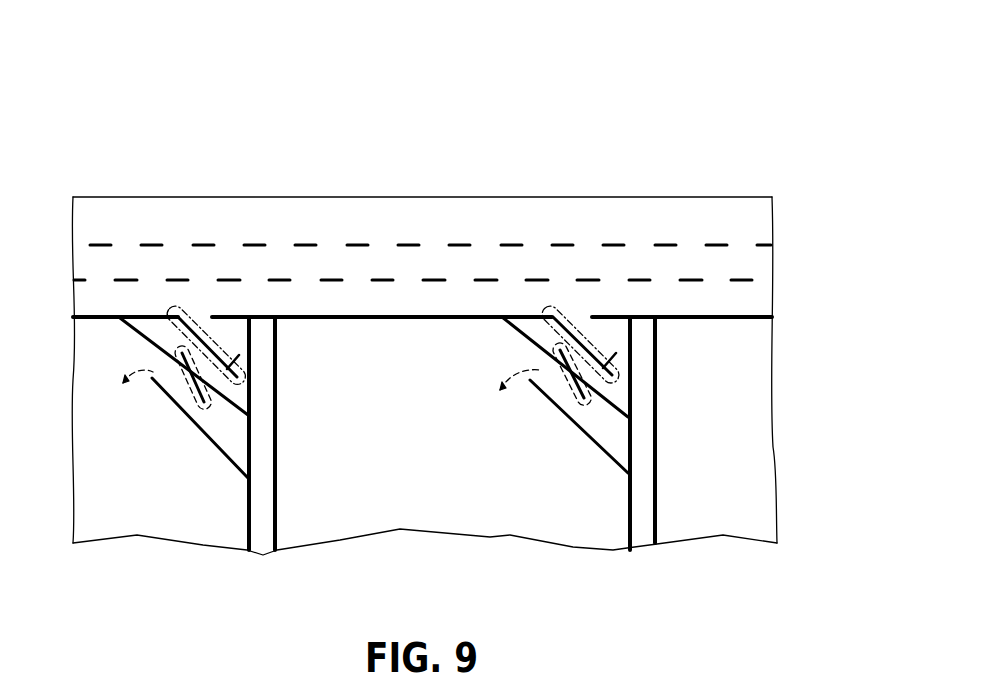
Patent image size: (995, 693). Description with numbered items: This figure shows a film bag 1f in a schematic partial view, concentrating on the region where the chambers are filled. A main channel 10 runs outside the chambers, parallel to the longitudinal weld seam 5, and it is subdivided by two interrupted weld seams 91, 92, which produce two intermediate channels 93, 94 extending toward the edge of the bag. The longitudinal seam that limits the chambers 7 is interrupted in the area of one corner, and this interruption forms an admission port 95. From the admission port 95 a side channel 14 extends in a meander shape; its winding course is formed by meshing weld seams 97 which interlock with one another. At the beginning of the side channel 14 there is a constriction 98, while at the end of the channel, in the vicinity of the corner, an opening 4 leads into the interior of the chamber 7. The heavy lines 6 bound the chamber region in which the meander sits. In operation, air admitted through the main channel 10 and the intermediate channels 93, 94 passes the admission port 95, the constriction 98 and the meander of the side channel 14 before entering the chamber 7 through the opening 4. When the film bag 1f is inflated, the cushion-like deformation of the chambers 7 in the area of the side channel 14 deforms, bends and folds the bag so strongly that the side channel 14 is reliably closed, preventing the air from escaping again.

The film bag 1f is at (697, 123).
The main channel 10 is at (723, 197).
The interrupted weld seam 91 is at (260, 243).
The interrupted weld seam 92 is at (285, 280).
The intermediate channel 93 is at (370, 262).
The intermediate channel 94 is at (430, 298).
The admission port 95 is at (582, 315).
The longitudinal weld seam 5 is at (362, 320).
The opening 4 is at (527, 358).
The groove 6 is at (277, 515).
The chamber 7 is at (510, 503).
The side channel 14 is at (560, 378).
The meshing weld seam 97 is at (602, 452).
The constriction 98 is at (618, 358).